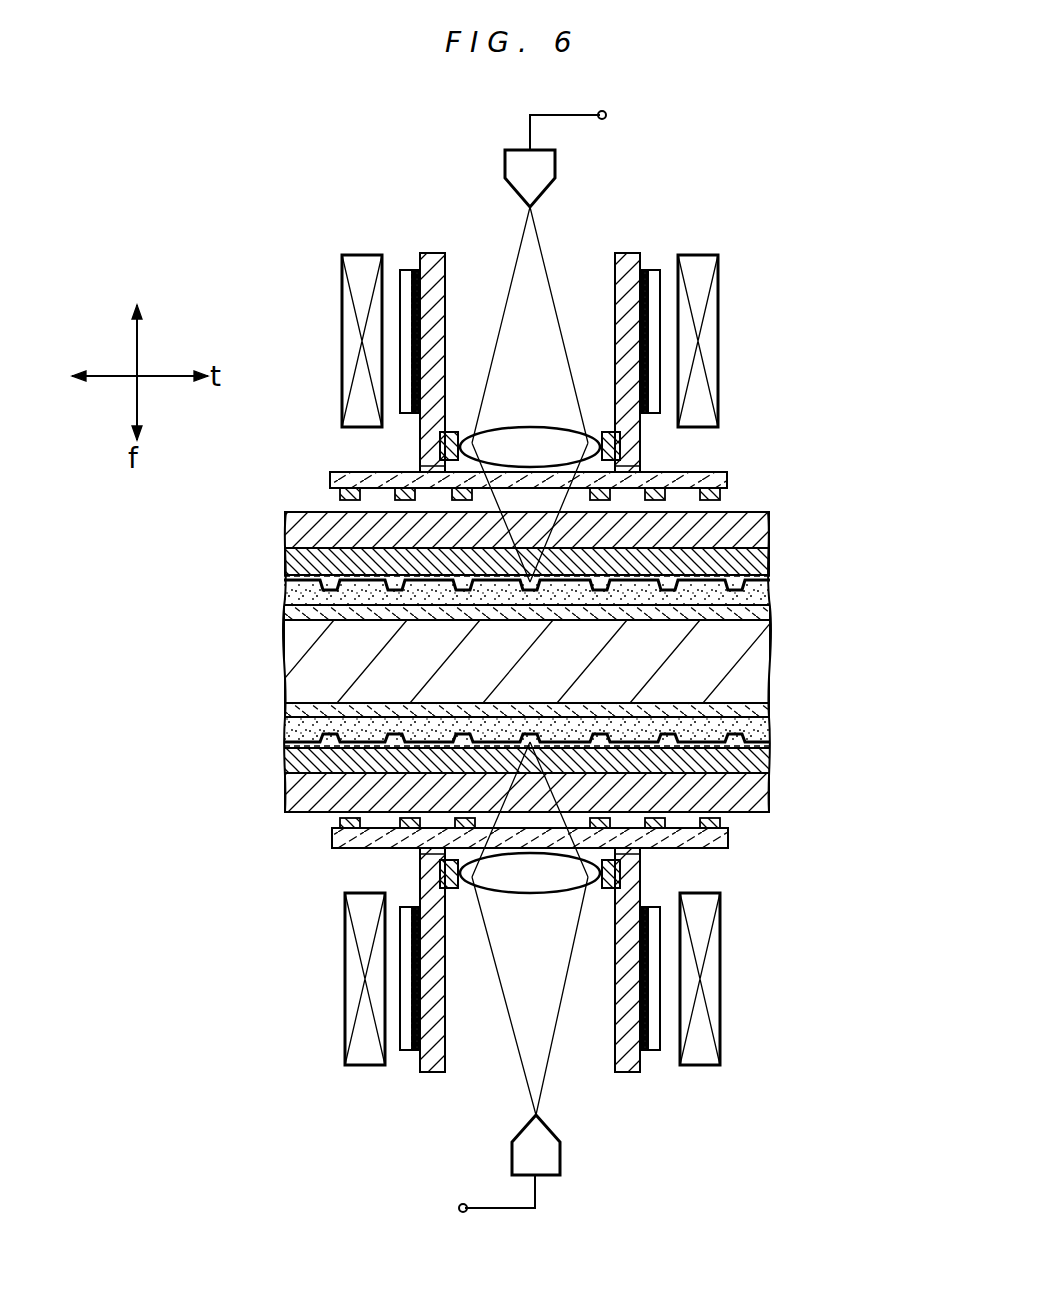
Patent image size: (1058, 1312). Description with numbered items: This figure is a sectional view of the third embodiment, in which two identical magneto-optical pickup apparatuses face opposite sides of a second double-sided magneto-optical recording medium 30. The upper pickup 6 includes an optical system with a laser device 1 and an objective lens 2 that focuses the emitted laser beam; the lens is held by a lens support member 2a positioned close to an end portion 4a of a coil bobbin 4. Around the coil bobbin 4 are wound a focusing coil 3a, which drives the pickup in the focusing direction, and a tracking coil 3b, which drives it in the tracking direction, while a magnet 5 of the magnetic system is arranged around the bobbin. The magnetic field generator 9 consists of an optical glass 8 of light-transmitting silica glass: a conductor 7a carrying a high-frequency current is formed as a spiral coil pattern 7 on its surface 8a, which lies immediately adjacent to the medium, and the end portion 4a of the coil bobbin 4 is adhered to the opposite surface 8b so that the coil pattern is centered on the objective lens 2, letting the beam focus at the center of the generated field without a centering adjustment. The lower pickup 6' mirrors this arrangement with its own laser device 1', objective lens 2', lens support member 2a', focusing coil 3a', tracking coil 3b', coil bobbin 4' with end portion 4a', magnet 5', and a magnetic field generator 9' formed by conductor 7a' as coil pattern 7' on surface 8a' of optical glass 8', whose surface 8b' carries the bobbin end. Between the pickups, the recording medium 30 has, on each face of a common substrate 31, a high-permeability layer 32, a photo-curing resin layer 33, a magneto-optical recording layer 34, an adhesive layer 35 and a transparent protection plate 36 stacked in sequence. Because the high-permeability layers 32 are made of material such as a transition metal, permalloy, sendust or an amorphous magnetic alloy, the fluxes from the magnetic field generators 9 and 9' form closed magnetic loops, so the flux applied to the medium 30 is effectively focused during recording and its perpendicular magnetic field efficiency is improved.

The laser device 1 is at (523, 346).
The laser device 1' is at (541, 977).
The objective lens 2 is at (524, 409).
The objective lens 2' is at (535, 911).
The lens support member 2a is at (456, 396).
The lens support member 2a' is at (609, 916).
The focusing coil 3a is at (530, 293).
The focusing coil 3a' is at (535, 1032).
The tracking coil 3b is at (531, 306).
The tracking coil 3b' is at (536, 1016).
The coil bobbin 4 is at (530, 336).
The coil bobbin 4' is at (530, 985).
The end portion of the coil bobbin 4a is at (529, 450).
The end portion of the coil bobbin 4a' is at (532, 871).
The magnet 5 is at (519, 341).
The magnet 5' is at (540, 979).
The pickup 6 is at (519, 346).
The pickup 6' is at (540, 977).
The spiral coil pattern 7 is at (550, 456).
The spiral coil pattern 7' is at (534, 881).
The conductor 7a is at (534, 445).
The conductor 7a' is at (541, 890).
The optical glass 8 is at (538, 467).
The optical glass 8' is at (534, 862).
The surface of the optical glass 8a is at (542, 486).
The surface of the optical glass 8a' is at (528, 846).
The surface of the optical glass 8b is at (543, 459).
The surface of the optical glass 8b' is at (528, 867).
The magnetic field generator 9 is at (767, 423).
The magnetic field generator 9' is at (289, 901).
The second double-sided magneto-optical recording medium 30 is at (844, 626).
The common substrate 31 is at (758, 656).
The high-permeability layer 32 is at (766, 614).
The photo-curing resin layer 33 is at (766, 596).
The magneto-optical recording layer 34 is at (766, 580).
The adhesive layer 35 is at (766, 557).
The transparent protection plate 36 is at (766, 526).